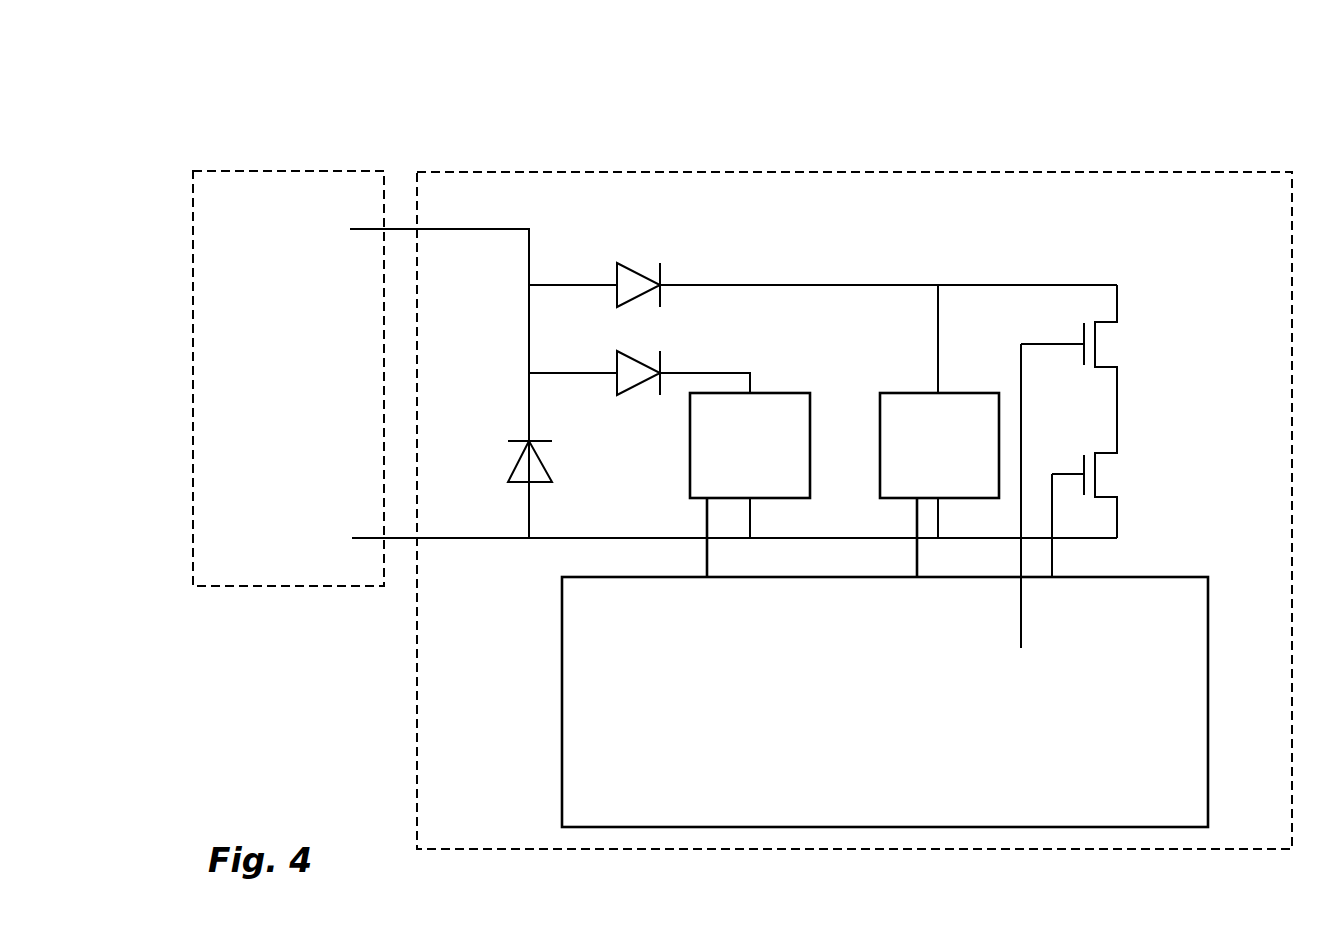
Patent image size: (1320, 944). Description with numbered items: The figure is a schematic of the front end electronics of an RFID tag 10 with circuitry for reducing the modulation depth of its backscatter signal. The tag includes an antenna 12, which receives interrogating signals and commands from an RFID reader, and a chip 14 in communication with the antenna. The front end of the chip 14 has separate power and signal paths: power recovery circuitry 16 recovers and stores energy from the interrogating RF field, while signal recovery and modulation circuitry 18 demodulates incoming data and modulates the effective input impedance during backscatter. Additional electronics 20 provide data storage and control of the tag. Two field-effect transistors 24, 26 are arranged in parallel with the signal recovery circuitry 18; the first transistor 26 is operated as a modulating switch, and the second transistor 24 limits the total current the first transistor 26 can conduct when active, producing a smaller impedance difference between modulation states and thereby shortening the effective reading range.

The RFID tag 10 is at (1176, 90).
The antenna 12 is at (288, 165).
The chip 14 is at (542, 165).
The power recovery circuitry 16 is at (788, 393).
The signal recovery and modulation circuitry 18 is at (915, 393).
The additional electronics 20 is at (562, 680).
The second transistor 24 is at (1143, 477).
The first transistor 26 is at (1143, 347).